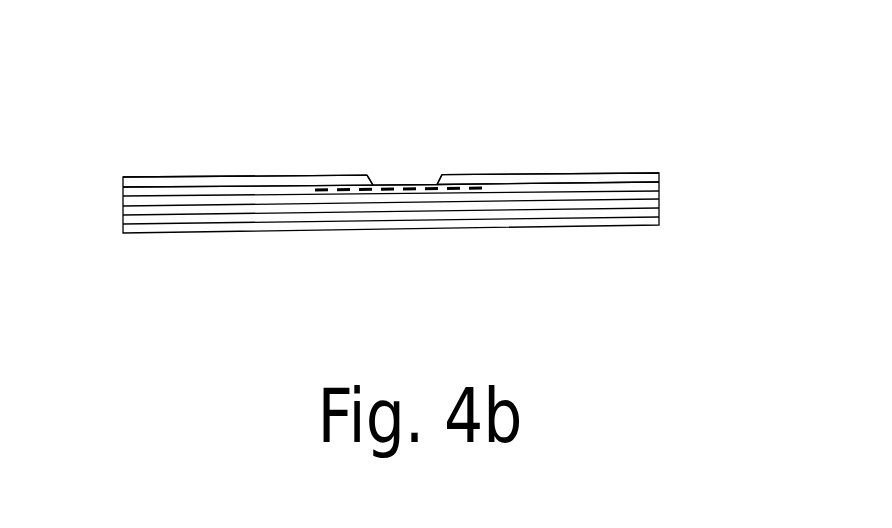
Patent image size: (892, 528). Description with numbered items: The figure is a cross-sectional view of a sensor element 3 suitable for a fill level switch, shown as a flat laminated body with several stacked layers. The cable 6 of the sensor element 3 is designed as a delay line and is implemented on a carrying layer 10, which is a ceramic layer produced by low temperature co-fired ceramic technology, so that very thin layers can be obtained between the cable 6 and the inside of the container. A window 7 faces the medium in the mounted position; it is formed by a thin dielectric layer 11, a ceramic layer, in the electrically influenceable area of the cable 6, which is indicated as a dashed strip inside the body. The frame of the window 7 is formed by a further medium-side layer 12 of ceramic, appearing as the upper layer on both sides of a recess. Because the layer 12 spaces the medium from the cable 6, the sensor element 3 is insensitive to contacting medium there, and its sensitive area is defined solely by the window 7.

The sensor element 3 is at (148, 253).
The cable 6 is at (343, 189).
The window 7 is at (405, 173).
The carrying layer 10 is at (593, 178).
The dielectric layer 11 is at (415, 187).
The medium-side layer 12 is at (162, 183).